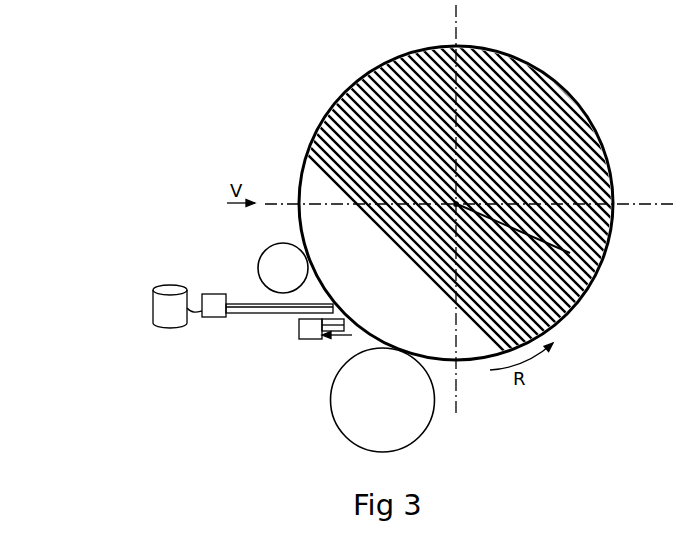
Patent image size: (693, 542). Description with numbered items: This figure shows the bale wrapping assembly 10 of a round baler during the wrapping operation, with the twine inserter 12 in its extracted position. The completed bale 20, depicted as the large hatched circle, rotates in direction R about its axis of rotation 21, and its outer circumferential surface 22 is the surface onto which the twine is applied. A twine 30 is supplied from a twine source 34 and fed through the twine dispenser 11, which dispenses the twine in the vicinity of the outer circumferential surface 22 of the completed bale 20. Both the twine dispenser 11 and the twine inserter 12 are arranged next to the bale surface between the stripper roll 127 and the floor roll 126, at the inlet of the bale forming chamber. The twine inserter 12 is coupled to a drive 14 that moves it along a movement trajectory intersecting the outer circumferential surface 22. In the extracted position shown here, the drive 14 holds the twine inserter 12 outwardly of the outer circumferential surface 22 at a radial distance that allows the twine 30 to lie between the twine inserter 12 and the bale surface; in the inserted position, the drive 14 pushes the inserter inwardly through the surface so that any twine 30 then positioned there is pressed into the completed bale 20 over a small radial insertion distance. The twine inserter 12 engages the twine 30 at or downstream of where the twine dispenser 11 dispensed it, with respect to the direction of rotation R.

The bale wrapping assembly 10 is at (212, 304).
The twine dispenser 11 is at (263, 308).
The twine inserter 12 is at (338, 341).
The drive 14 is at (302, 340).
The completed bale 20 is at (602, 182).
The axis of rotation 21 is at (592, 280).
The outer circumferential surface 22 is at (313, 115).
The twine 30 is at (197, 311).
The twine source 34 is at (170, 305).
The floor roll 126 is at (343, 418).
The stripper roll 127 is at (283, 252).